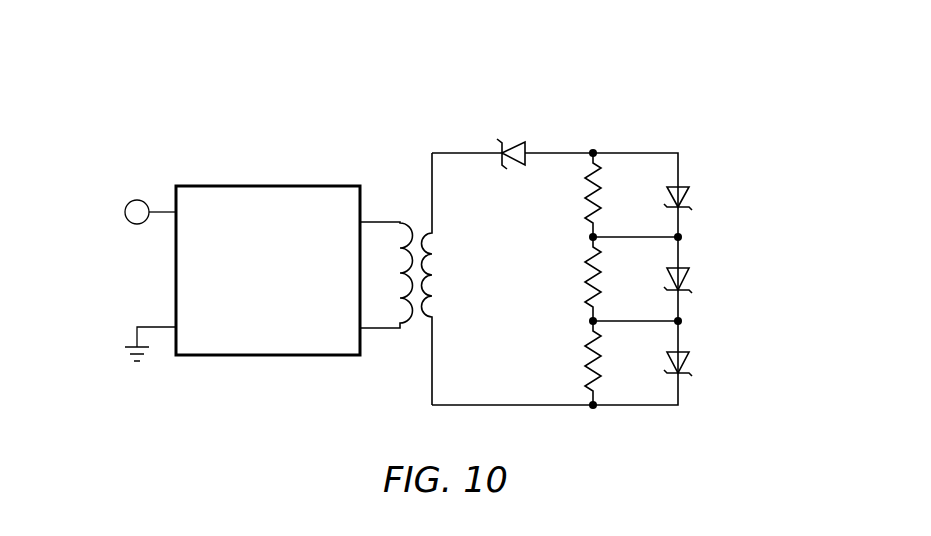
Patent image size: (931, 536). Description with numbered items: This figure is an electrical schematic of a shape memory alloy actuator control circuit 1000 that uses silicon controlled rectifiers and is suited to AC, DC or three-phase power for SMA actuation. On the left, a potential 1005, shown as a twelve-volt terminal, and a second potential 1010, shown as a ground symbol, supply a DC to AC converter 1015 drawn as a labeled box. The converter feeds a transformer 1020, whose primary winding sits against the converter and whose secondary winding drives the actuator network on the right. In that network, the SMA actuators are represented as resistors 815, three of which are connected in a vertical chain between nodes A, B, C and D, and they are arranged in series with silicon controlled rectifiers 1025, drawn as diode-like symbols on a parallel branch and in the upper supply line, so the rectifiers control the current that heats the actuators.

The lighting system / LED driver circuit 1000 is at (700, 82).
The potential 1005 is at (130, 157).
The second potential 1010 is at (127, 372).
The DC to AC converter 1015 is at (288, 184).
The transformer 1020 is at (417, 227).
The silicon controlled rectifiers 1025 is at (513, 145).
The resistors 815 is at (592, 185).